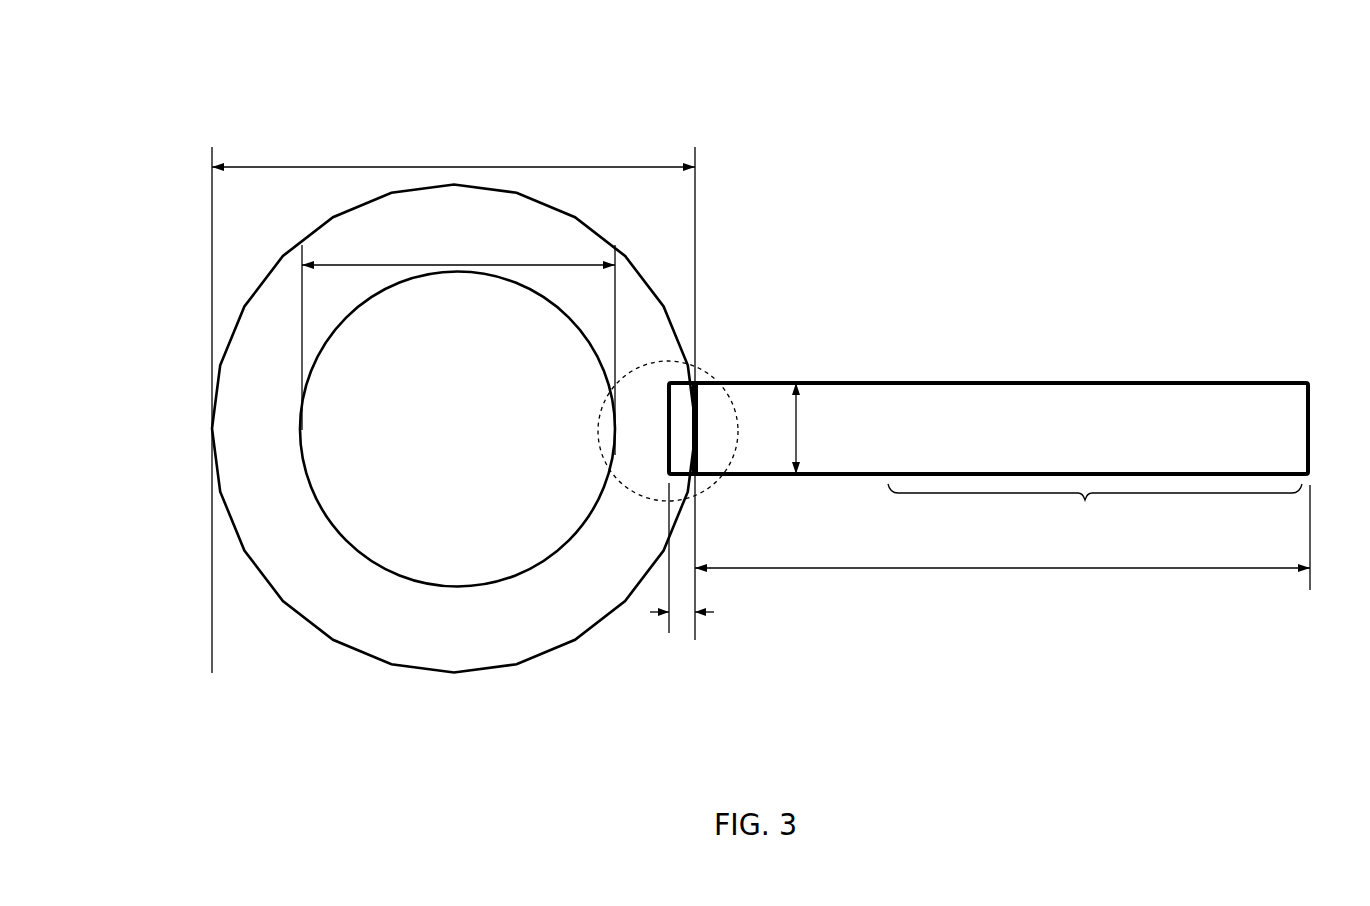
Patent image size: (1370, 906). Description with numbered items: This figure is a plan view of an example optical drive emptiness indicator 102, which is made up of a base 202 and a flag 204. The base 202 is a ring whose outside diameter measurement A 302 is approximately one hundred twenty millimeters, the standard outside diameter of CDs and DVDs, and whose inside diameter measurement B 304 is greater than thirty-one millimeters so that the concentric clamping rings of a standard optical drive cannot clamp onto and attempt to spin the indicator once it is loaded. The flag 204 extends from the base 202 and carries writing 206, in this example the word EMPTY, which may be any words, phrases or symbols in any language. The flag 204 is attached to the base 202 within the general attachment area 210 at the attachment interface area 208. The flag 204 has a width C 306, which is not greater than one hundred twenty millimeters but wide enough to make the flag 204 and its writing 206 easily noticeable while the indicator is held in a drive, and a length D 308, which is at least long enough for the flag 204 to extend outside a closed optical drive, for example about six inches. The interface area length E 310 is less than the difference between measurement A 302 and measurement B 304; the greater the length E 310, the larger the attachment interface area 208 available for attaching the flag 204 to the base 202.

The optical drive emptiness indicator 102 is at (248, 66).
The base 202 is at (552, 613).
The flag 204 is at (862, 393).
The writing 206 is at (1082, 500).
The attachment interface area 208 is at (683, 437).
The general attachment area 210 is at (650, 500).
The outside diameter measurement A 302 is at (462, 145).
The inside diameter measurement B 304 is at (462, 240).
The width C 306 is at (778, 440).
The length D 308 is at (1003, 549).
The interface area length E 310 is at (683, 618).